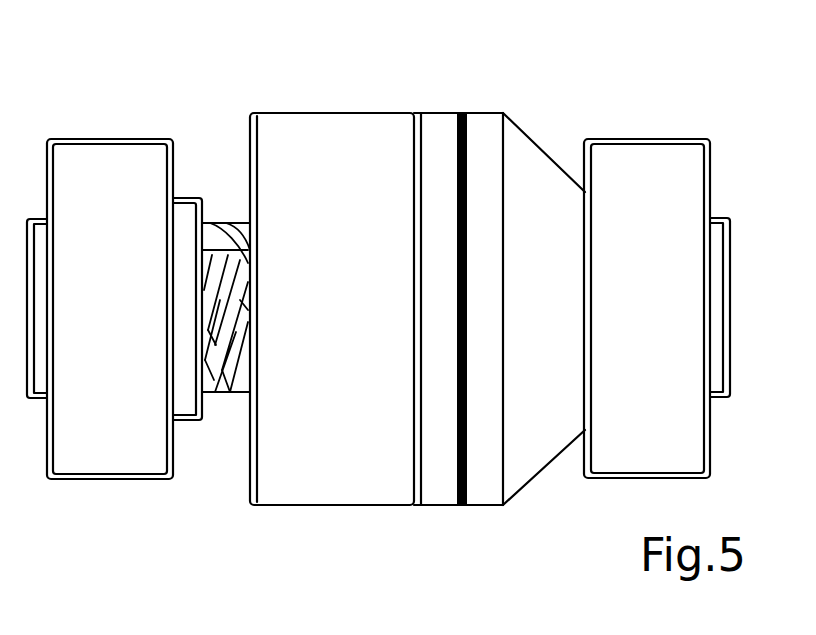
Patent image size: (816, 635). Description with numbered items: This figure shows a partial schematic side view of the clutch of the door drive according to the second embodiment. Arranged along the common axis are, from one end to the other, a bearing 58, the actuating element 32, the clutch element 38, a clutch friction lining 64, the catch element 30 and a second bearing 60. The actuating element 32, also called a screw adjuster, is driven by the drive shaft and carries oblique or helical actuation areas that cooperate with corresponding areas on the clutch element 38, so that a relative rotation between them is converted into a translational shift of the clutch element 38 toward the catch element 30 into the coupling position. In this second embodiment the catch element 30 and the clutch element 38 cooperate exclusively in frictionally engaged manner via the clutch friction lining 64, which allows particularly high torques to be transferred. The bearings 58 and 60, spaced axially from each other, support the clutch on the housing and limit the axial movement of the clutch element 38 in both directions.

The bearing 58 is at (103, 185).
The actuating element 32 is at (186, 210).
The clutch element 38 is at (332, 143).
The clutch friction lining 64 is at (438, 138).
The catch element 30 is at (483, 140).
The bearing 60 is at (642, 178).